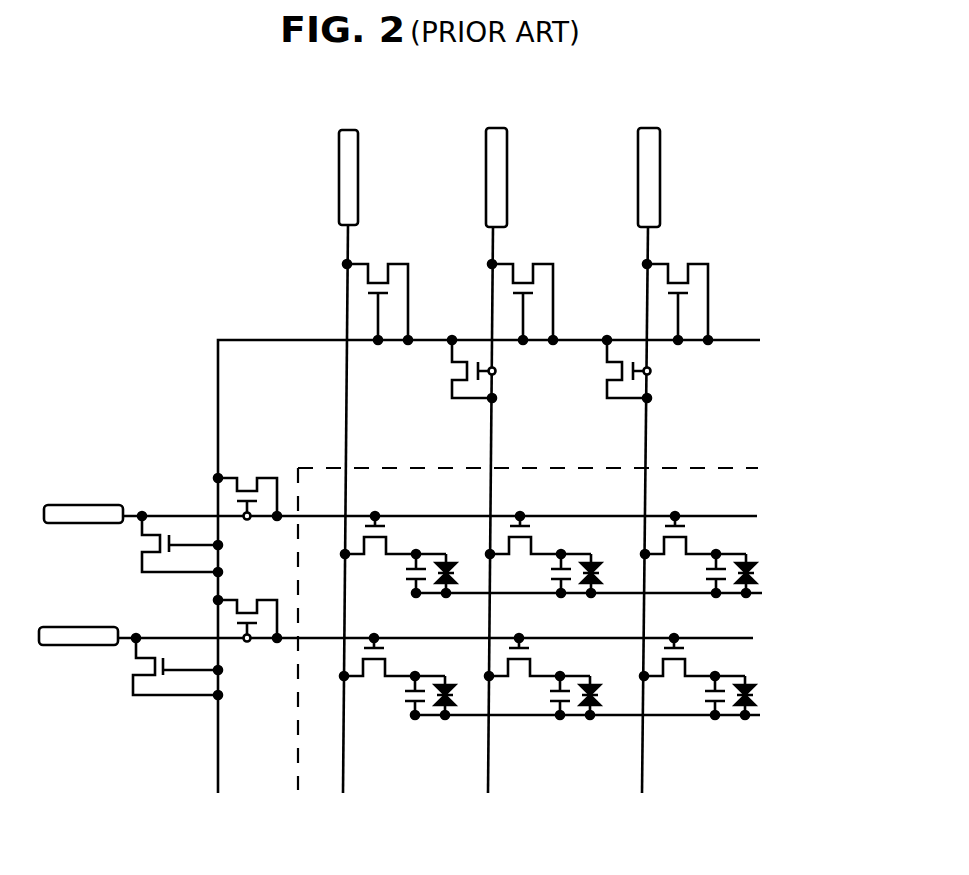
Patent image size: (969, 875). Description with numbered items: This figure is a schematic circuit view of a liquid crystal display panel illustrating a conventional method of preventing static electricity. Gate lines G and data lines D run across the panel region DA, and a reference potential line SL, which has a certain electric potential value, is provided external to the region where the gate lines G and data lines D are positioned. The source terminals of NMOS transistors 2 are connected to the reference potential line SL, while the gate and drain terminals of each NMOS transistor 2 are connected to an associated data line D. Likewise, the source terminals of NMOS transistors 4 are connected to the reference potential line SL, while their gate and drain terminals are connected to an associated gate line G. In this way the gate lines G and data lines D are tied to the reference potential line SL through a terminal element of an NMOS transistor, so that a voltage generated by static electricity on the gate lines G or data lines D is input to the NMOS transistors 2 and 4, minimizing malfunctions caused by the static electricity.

The NMOS transistor 2 is at (458, 372).
The NMOS transistor 4 is at (249, 482).
The reference potential line SL is at (740, 338).
The display area DA is at (550, 619).
The gate line G is at (757, 516).
The data line D is at (497, 478).